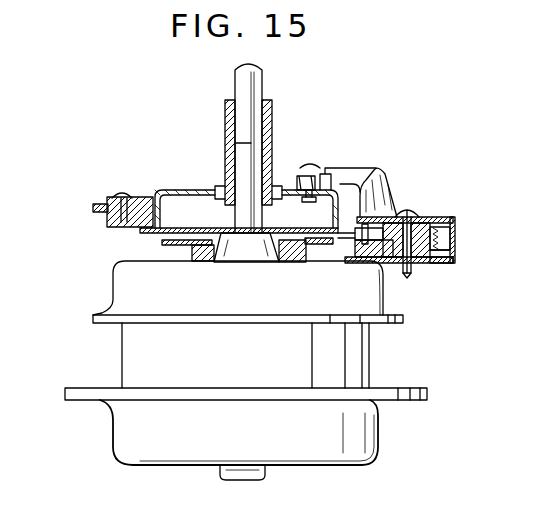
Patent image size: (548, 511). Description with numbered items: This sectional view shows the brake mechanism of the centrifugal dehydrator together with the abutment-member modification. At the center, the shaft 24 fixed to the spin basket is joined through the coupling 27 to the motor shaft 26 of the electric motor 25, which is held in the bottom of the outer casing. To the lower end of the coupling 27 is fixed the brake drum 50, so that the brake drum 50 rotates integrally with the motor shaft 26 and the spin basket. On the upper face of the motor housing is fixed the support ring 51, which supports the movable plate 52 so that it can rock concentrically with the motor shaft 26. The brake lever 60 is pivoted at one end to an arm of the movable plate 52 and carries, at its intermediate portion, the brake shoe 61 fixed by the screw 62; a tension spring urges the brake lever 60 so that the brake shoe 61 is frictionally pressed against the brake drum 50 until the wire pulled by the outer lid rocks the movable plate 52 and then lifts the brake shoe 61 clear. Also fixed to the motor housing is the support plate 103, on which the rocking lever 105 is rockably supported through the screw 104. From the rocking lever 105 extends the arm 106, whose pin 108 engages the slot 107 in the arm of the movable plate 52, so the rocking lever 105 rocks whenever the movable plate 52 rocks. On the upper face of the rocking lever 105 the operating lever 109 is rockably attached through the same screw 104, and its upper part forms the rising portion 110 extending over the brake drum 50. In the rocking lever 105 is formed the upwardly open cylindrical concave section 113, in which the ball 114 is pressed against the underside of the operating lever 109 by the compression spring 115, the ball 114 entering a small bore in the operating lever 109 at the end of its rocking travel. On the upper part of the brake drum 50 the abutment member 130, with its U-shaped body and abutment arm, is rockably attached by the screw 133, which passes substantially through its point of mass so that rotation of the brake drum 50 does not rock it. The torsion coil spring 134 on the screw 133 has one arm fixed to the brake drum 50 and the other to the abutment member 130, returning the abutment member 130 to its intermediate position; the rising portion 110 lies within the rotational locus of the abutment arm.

The shaft 24 is at (258, 75).
The electric motor 25 is at (353, 368).
The motor shaft 26 is at (242, 147).
The coupling 27 is at (273, 126).
The brake drum 50 is at (165, 191).
The support ring 51 is at (287, 262).
The movable plate 52 is at (154, 246).
The brake lever 60 is at (93, 207).
The brake shoe 61 is at (141, 197).
The screw 62 is at (122, 191).
The support plate 103 is at (405, 266).
The screw 104 is at (406, 210).
The rocking lever 105 is at (412, 270).
The arm 106 is at (360, 257).
The slot 107 is at (366, 245).
The pin 108 is at (357, 240).
The operating lever 109 is at (444, 222).
The rising portion 110 is at (383, 164).
The cylindrical concave section 113 is at (449, 263).
The ball 114 is at (447, 233).
The compression spring 115 is at (448, 251).
The abutment member 130 is at (328, 170).
The screw 133 is at (307, 170).
The torsion coil spring 134 is at (308, 202).